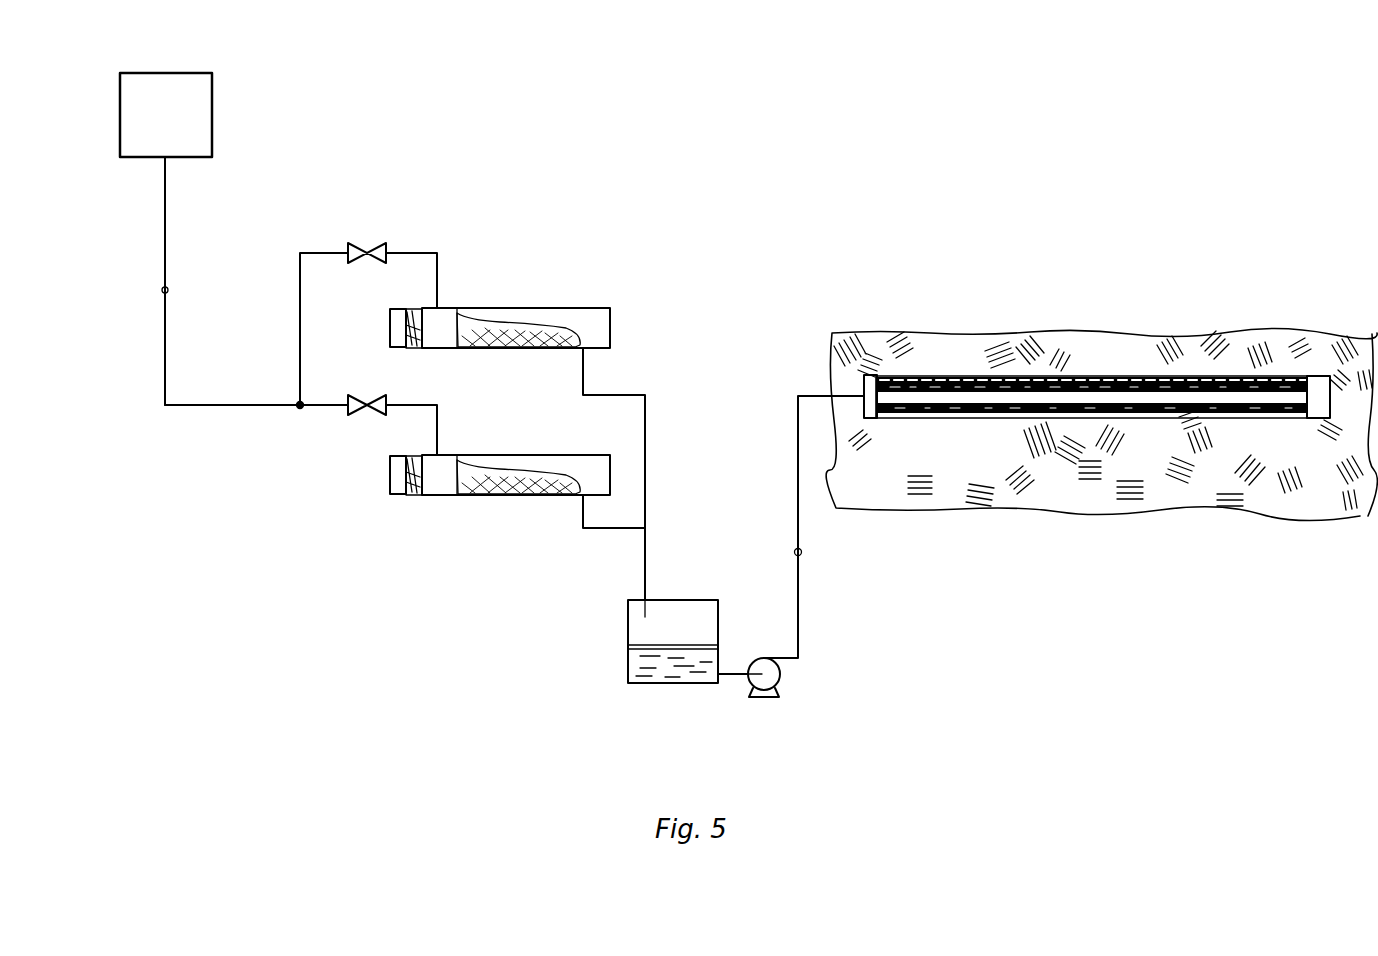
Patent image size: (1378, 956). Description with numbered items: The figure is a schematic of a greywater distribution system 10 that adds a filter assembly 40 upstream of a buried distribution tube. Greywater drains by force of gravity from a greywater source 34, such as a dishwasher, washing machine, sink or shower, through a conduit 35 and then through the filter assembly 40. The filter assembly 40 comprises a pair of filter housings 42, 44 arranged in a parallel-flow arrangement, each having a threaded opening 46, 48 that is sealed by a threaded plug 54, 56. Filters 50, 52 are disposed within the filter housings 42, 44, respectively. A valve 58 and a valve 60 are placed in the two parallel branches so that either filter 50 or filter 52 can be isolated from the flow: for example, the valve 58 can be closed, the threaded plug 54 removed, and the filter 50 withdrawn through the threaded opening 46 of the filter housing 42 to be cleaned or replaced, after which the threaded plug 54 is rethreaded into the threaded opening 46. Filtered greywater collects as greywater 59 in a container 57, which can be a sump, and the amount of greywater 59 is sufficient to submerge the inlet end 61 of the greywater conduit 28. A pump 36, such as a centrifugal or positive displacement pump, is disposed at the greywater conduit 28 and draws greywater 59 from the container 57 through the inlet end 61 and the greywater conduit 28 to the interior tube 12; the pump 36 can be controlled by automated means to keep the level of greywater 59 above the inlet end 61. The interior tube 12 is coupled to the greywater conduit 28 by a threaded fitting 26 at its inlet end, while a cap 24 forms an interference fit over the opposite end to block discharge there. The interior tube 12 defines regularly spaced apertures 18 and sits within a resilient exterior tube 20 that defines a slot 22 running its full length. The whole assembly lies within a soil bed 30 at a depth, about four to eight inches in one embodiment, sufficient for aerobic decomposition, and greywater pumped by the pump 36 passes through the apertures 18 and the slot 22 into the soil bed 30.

The greywater distribution system 10 is at (523, 124).
The interior tube 12 is at (1093, 376).
The apertures 18 is at (906, 377).
The exterior tube 20 is at (1167, 376).
The slot 22 is at (948, 418).
The cap 24 is at (1318, 418).
The fitting 26 is at (871, 418).
The greywater conduit 28 is at (802, 552).
The soil bed 30 is at (1105, 494).
The greywater source 34 is at (182, 122).
The conduit 35 is at (162, 288).
The pump 36 is at (781, 678).
The filter assembly 40 is at (548, 308).
The filter housing 42 is at (613, 318).
The filter housing 44 is at (530, 498).
The threaded opening 46 is at (413, 349).
The threaded opening 48 is at (413, 497).
The filter 50 is at (479, 316).
The filter 52 is at (498, 462).
The threaded plug 54 is at (390, 323).
The threaded plug 56 is at (390, 478).
The container 57 is at (628, 664).
The valve 58 is at (370, 244).
The greywater 59 is at (672, 677).
The valve 60 is at (370, 417).
The inlet end 61 is at (703, 656).